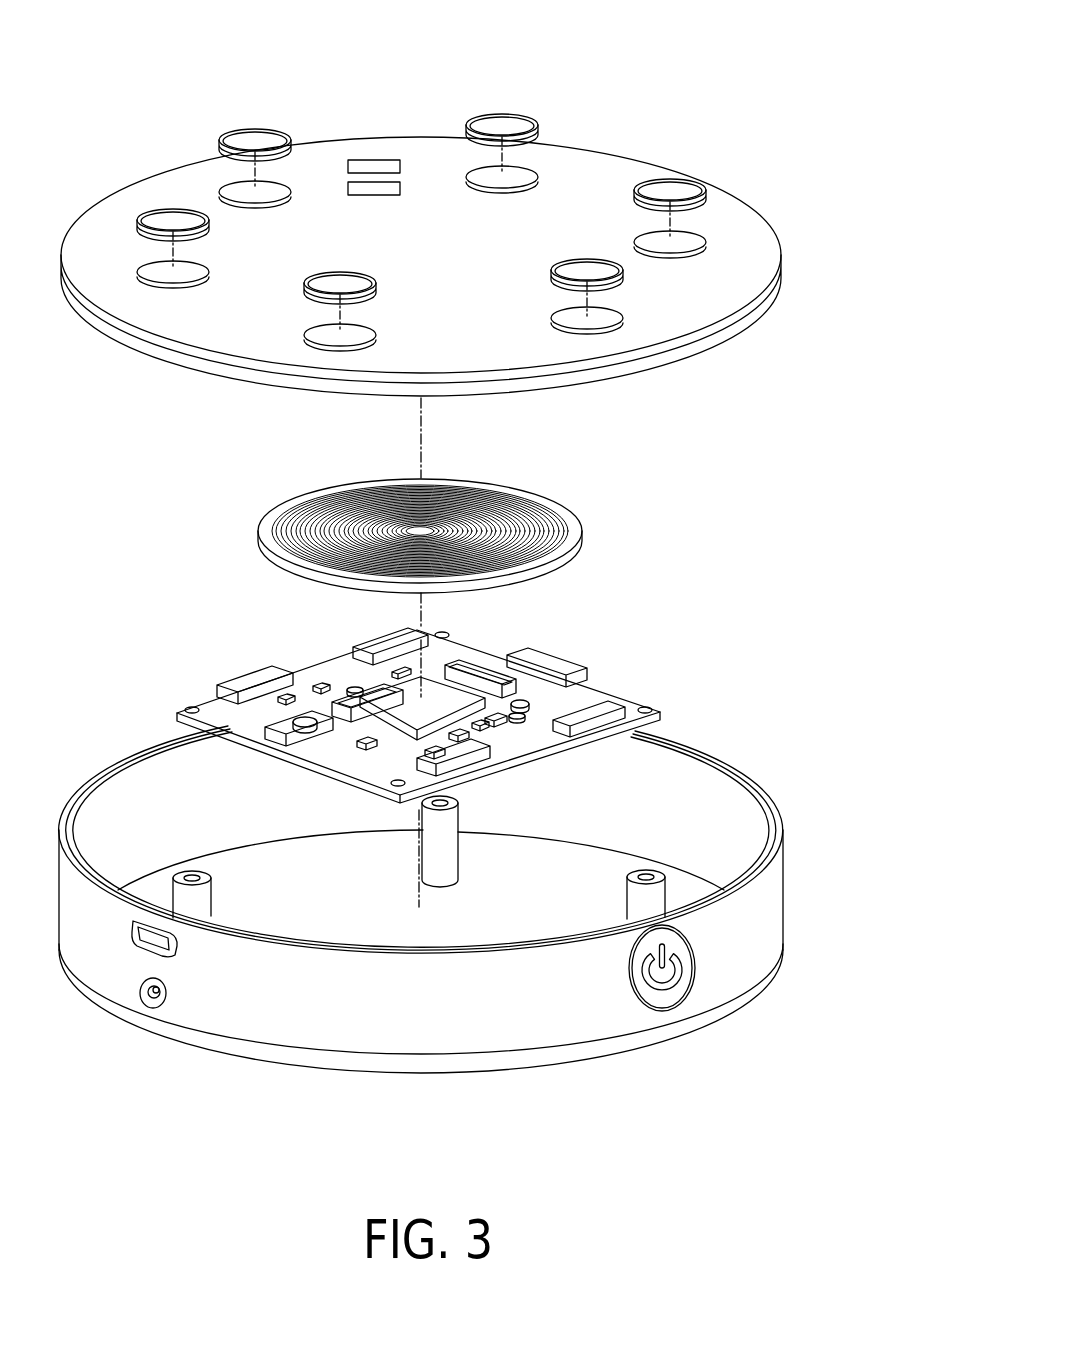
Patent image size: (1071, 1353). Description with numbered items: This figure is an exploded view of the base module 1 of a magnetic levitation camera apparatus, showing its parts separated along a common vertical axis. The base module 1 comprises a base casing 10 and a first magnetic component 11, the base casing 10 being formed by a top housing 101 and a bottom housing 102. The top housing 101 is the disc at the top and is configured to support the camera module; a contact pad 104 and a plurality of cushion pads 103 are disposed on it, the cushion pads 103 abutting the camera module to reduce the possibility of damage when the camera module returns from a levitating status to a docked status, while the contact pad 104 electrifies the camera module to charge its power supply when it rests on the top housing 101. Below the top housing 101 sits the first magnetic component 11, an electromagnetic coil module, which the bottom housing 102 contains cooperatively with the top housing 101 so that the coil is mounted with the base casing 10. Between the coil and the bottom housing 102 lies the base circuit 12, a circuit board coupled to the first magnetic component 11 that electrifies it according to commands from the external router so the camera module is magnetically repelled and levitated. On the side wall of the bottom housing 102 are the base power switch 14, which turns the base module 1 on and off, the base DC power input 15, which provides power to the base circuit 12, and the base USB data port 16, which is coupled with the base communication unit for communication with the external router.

The base module 1 is at (678, 48).
The base casing 10 is at (813, 463).
The top housing 101 is at (675, 322).
The bottom housing 102 is at (692, 780).
The cushion pads 103 is at (167, 215).
The contact pad 104 is at (373, 167).
The first magnetic component 11 is at (520, 500).
The base circuit 12 is at (583, 690).
The base power switch 14 is at (662, 1000).
The base DC power input 15 is at (153, 1007).
The base USB data port 16 is at (170, 957).